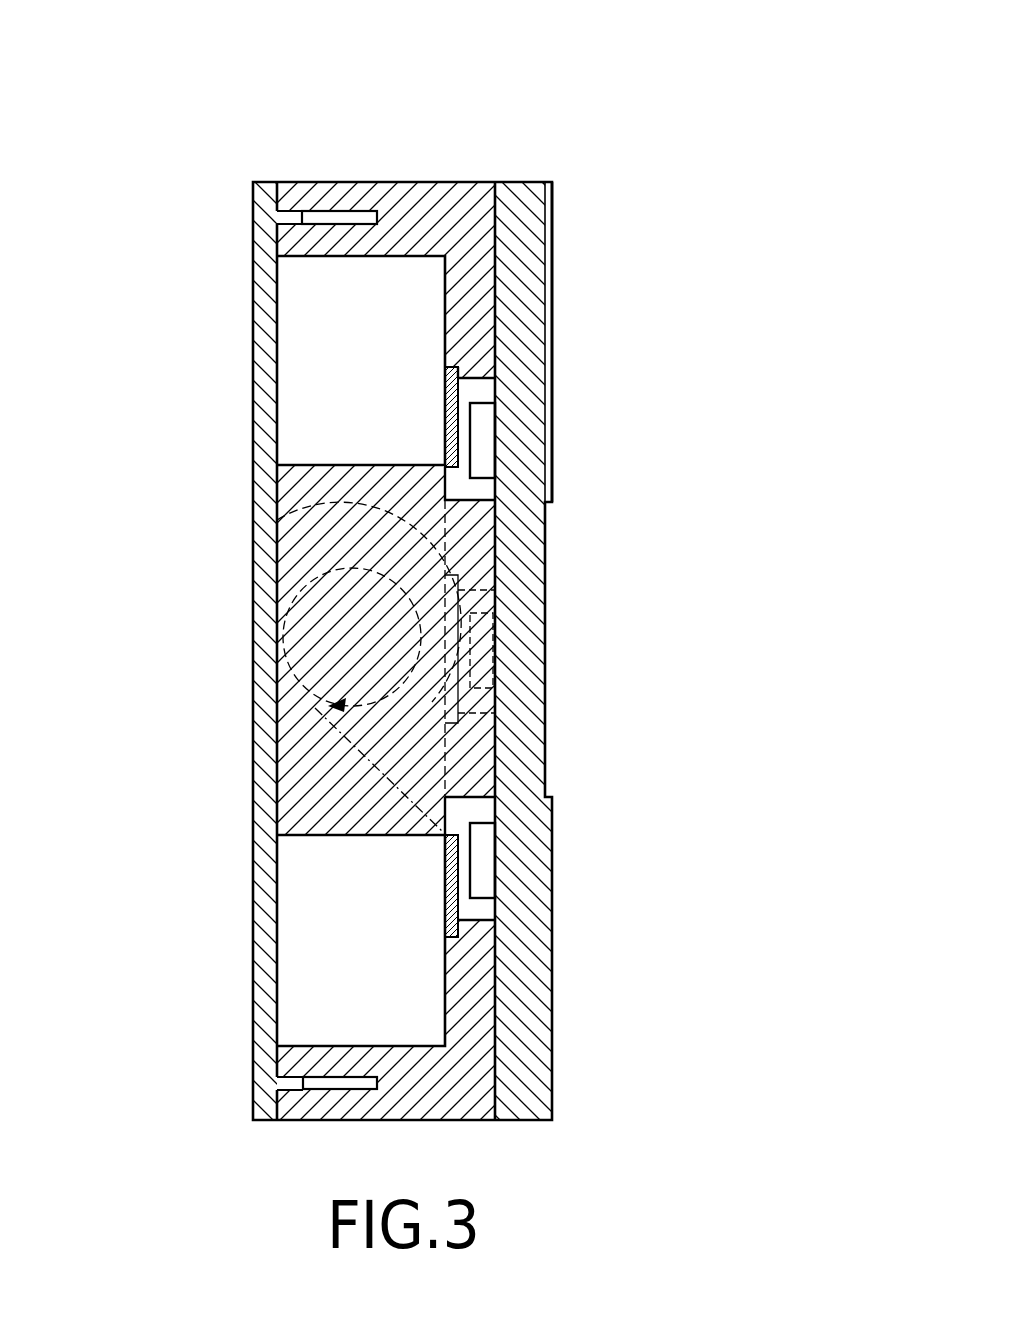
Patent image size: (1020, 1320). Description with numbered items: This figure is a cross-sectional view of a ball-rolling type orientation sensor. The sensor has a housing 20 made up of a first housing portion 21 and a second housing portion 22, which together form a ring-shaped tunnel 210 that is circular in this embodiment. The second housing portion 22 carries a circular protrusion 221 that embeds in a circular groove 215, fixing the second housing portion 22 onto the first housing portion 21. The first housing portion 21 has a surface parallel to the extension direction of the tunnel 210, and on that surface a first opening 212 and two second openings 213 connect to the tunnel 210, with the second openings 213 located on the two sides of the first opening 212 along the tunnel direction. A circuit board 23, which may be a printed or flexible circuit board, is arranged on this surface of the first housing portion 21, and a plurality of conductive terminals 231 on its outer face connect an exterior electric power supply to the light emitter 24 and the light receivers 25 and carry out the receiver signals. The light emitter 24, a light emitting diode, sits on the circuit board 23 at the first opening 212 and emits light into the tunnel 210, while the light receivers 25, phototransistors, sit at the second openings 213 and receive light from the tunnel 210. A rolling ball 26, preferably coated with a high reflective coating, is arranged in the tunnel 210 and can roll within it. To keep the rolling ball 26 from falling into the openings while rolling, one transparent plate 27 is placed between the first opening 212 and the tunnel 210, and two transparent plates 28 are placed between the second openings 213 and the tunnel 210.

The housing 20 is at (542, 58).
The first housing portion 21 is at (475, 197).
The second housing portion 22 is at (270, 285).
The circuit board 23 is at (545, 272).
The conductive terminals 231 is at (553, 340).
The circular protrusion 221 is at (297, 217).
The circular groove 215 is at (340, 217).
The tunnel 210 is at (345, 985).
The first opening 212 is at (485, 728).
The second openings 213 is at (478, 500).
The light emitter 24 is at (440, 667).
The light receivers 25 is at (482, 440).
The rolling ball 26 is at (300, 580).
The transparent plate 27 is at (277, 520).
The transparent plates 28 is at (445, 410).